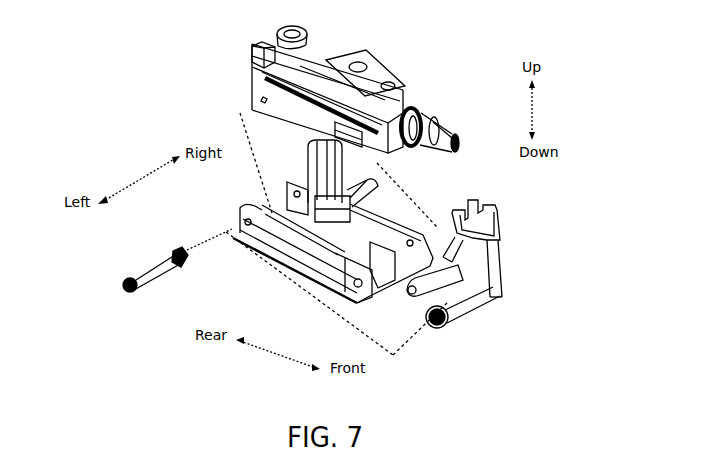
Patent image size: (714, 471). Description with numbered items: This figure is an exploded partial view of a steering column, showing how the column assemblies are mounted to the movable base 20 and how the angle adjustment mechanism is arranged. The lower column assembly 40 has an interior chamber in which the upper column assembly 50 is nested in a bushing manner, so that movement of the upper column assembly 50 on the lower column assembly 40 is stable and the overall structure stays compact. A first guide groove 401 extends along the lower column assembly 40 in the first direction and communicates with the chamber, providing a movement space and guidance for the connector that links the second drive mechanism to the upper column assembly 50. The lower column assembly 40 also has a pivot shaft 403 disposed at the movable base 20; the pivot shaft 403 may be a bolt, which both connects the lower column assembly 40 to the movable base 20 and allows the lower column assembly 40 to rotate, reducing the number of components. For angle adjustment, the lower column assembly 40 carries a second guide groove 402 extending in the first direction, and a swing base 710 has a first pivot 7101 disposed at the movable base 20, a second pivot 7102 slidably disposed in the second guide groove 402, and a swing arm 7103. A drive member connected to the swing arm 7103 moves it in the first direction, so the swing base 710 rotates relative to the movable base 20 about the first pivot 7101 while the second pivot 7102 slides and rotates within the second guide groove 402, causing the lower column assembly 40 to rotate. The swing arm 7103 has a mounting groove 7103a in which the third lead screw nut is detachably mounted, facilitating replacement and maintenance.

The lower column assembly 40 is at (316, 58).
The first guide groove 401 is at (254, 45).
The second guide groove 402 is at (376, 63).
The upper column assembly 50 is at (424, 123).
The movable base 20 is at (260, 267).
The pivot shaft 403 is at (153, 262).
The swing base 710 is at (477, 292).
The first pivot 7101 is at (442, 325).
The second pivot 7102 is at (465, 302).
The swing arm 7103 is at (500, 233).
The mounting groove 7103a is at (500, 203).